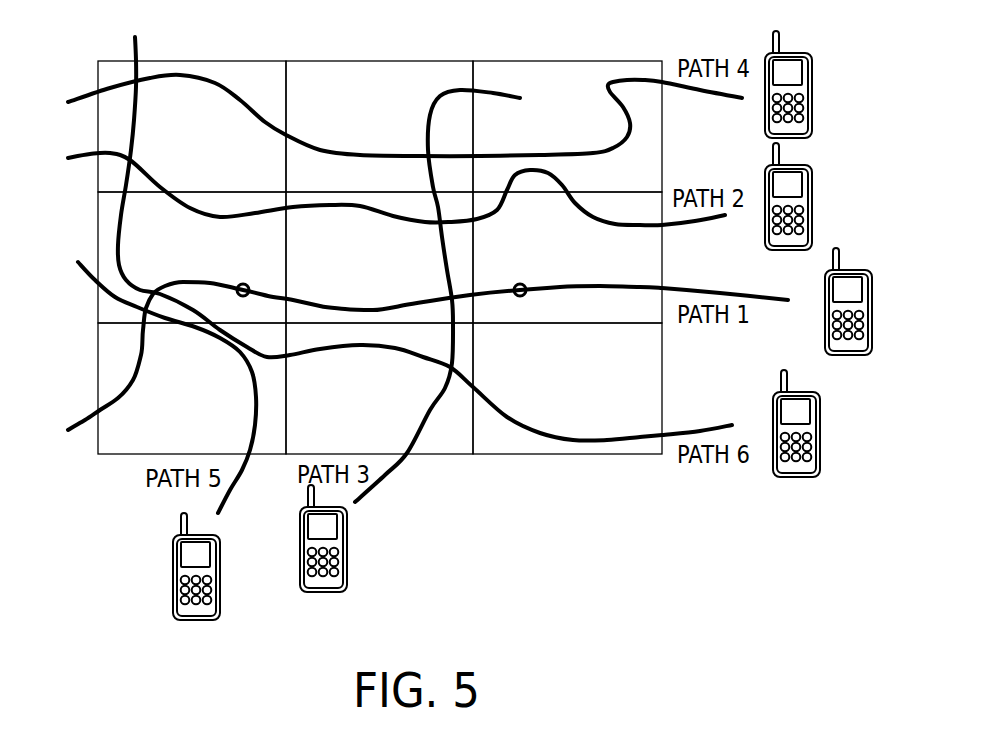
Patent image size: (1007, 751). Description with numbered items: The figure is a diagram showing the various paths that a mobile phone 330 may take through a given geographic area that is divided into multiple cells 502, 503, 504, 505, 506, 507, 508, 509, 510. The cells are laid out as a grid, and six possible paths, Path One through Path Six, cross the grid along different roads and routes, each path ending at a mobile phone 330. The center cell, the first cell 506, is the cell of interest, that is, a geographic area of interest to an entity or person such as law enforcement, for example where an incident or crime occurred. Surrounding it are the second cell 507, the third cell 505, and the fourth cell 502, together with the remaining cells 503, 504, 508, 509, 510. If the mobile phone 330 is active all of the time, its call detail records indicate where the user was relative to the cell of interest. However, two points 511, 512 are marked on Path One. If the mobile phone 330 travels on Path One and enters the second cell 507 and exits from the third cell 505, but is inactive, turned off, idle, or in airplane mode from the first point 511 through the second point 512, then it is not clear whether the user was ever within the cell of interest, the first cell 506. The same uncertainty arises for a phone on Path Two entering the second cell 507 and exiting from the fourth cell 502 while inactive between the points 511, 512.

The mobile phone 330 is at (790, 53).
The Cell 4 502 is at (97, 83).
The cell 503 is at (452, 60).
The cell 504 is at (613, 60).
The Cell 3 505 is at (97, 221).
The Cell 1 506 is at (308, 192).
The Cell 2 507 is at (662, 257).
The cell 508 is at (97, 357).
The cell 509 is at (437, 455).
The cell 510 is at (623, 455).
The point 511 is at (527, 294).
The point 512 is at (243, 283).